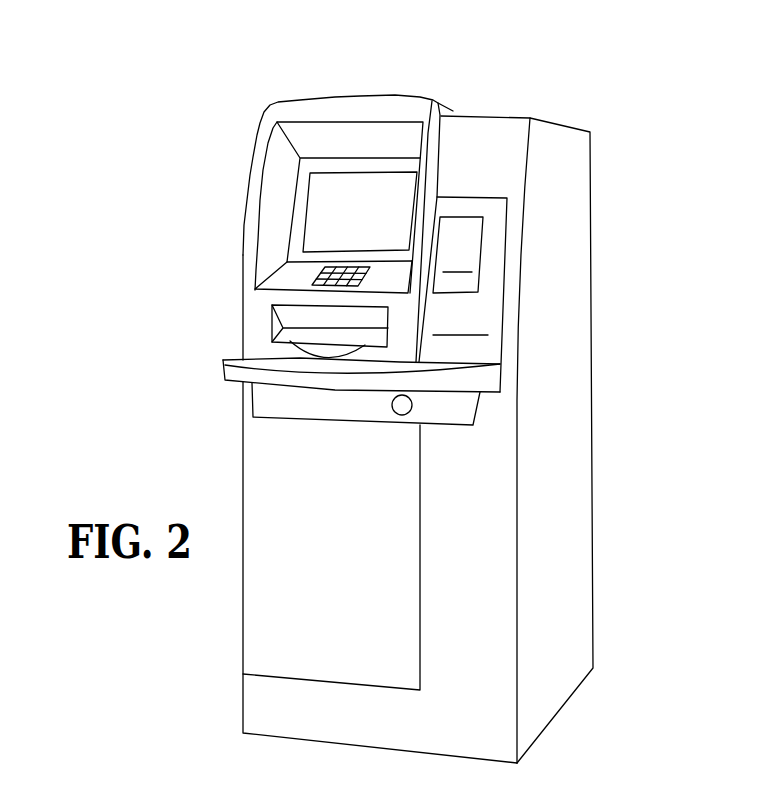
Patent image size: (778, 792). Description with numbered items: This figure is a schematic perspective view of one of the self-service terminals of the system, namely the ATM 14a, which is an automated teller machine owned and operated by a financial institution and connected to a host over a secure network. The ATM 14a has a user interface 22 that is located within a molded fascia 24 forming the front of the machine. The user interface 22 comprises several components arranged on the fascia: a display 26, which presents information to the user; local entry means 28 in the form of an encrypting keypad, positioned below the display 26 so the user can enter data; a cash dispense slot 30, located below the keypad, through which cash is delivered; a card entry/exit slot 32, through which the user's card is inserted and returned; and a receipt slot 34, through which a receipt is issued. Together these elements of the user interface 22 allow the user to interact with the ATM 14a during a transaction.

The SST (ATM) 14a is at (592, 190).
The user interface 22 is at (170, 217).
The molded fascia 24 is at (380, 96).
The display 26 is at (377, 223).
The local entry means 28 is at (312, 276).
The cash dispense slot 30 is at (322, 326).
The card entry/exit slot 32 is at (459, 272).
The receipt slot 34 is at (468, 334).